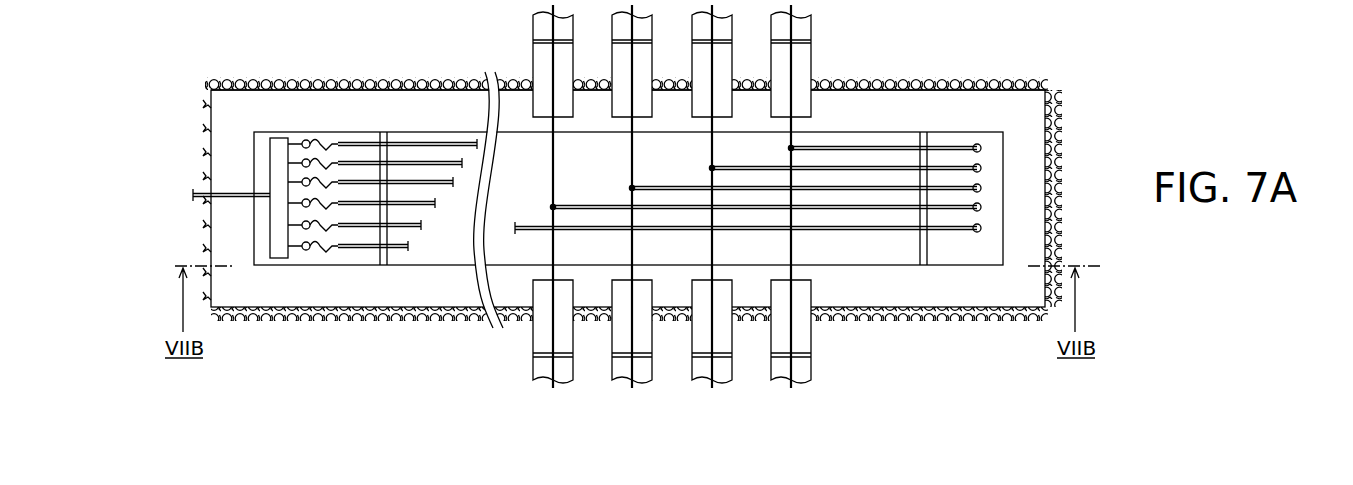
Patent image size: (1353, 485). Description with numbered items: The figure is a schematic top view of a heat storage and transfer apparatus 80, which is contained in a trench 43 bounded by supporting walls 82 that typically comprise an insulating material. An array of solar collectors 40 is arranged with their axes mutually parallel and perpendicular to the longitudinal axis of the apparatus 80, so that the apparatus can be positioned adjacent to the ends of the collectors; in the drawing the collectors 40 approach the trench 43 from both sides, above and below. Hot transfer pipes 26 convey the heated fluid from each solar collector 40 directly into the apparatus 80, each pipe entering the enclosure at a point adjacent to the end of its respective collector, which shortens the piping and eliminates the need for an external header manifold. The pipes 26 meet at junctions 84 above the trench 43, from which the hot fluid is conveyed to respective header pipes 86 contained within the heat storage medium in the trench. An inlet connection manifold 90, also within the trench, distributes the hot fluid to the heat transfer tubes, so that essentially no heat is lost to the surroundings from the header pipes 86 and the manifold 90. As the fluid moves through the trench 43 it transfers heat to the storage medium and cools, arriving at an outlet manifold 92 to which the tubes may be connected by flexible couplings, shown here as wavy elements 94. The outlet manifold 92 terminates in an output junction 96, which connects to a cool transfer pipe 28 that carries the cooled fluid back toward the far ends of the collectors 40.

The heat storage and transfer apparatus 80 is at (1085, 86).
The supporting walls 82 is at (936, 104).
The trench 43 is at (890, 262).
The solar collectors 40 is at (811, 72).
The hot transfer pipes 26 is at (628, 147).
The junctions 84 is at (790, 148).
The header pipes 86 is at (838, 228).
The inlet connection manifold 90 is at (981, 148).
The output junction 96 is at (283, 140).
The cool transfer pipe 28 is at (204, 191).
The outlet manifold 92 is at (331, 145).
The fuses 94 is at (319, 242).